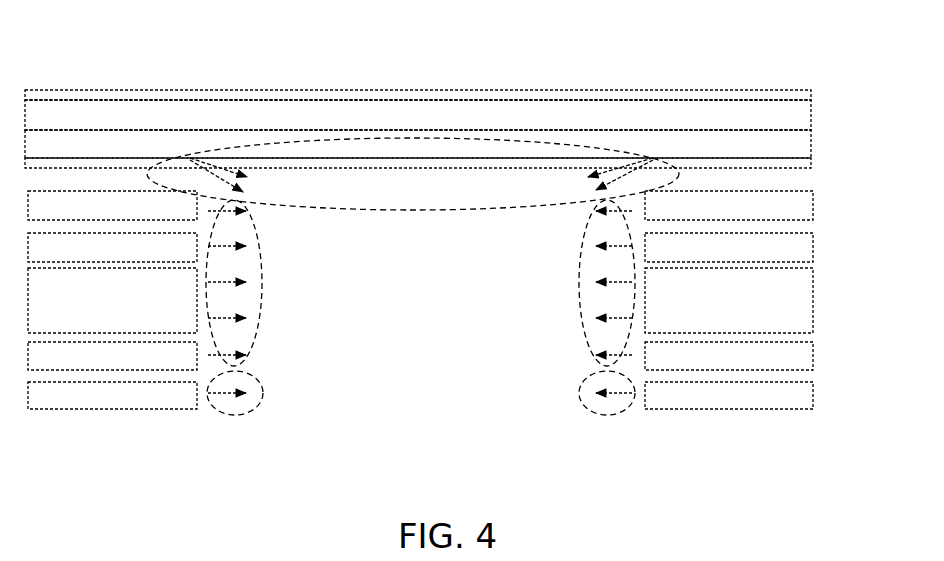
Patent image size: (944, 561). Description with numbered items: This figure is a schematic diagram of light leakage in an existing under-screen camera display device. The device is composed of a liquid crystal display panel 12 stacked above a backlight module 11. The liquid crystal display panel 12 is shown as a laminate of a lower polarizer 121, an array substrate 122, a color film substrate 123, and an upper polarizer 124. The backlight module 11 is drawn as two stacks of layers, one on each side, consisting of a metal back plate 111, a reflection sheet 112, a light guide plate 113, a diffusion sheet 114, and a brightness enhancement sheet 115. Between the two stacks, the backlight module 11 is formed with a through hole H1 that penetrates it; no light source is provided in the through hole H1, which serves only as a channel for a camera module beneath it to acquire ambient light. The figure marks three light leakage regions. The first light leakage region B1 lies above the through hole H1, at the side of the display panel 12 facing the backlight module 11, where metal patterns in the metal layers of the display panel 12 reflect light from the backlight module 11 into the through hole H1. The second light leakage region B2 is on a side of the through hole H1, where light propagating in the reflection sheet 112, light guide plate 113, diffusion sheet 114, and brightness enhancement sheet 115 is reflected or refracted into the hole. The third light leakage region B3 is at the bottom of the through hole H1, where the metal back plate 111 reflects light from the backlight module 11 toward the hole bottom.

The backlight module 11 is at (451, 331).
The metal back plate 111 is at (813, 394).
The reflection sheet 112 is at (813, 356).
The light guide plate 113 is at (813, 300).
The diffusion sheet 114 is at (813, 243).
The brightness enhancement sheet 115 is at (813, 206).
The liquid crystal display panel 12 is at (449, 108).
The lower polarizer 121 is at (811, 162).
The array substrate 122 is at (811, 140).
The color film substrate 123 is at (811, 118).
The upper polarizer 124 is at (811, 96).
The first light leakage region B1 is at (310, 200).
The second light leakage region B2 is at (257, 327).
The third light leakage region B3 is at (262, 395).
The through hole H1 is at (462, 323).